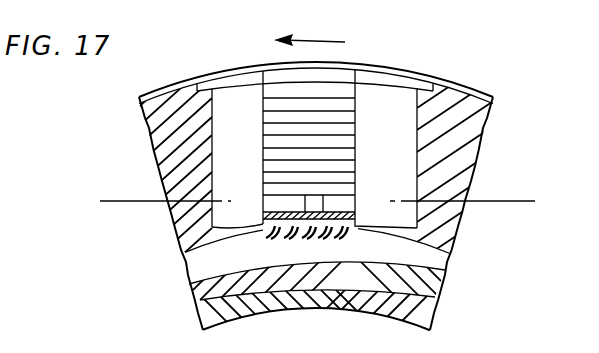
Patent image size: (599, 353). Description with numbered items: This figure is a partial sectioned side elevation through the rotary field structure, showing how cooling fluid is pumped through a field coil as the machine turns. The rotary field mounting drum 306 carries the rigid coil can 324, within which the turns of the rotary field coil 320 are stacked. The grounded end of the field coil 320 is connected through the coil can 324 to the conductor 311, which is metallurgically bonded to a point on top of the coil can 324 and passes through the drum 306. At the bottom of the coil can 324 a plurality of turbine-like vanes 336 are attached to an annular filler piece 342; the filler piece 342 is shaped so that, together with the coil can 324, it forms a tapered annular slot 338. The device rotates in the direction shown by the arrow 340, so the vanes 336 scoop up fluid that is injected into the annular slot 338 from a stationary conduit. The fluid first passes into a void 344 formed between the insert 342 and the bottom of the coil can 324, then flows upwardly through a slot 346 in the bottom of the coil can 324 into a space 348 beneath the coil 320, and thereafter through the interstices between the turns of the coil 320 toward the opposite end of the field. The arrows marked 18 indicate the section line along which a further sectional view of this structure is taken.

The section line 18- 18 is at (105, 192).
The rotary field mounting drum 306 is at (348, 312).
The conductor 311 is at (327, 190).
The rotary field coil 320 is at (345, 121).
The coil can 324 is at (427, 237).
The vanes 336 is at (295, 240).
The tapered annular slot 338 is at (418, 268).
The arrow 340 is at (345, 42).
The annular filler piece 342 is at (258, 310).
The void 344 is at (208, 235).
The slot 346 is at (260, 196).
The space 348 is at (358, 205).